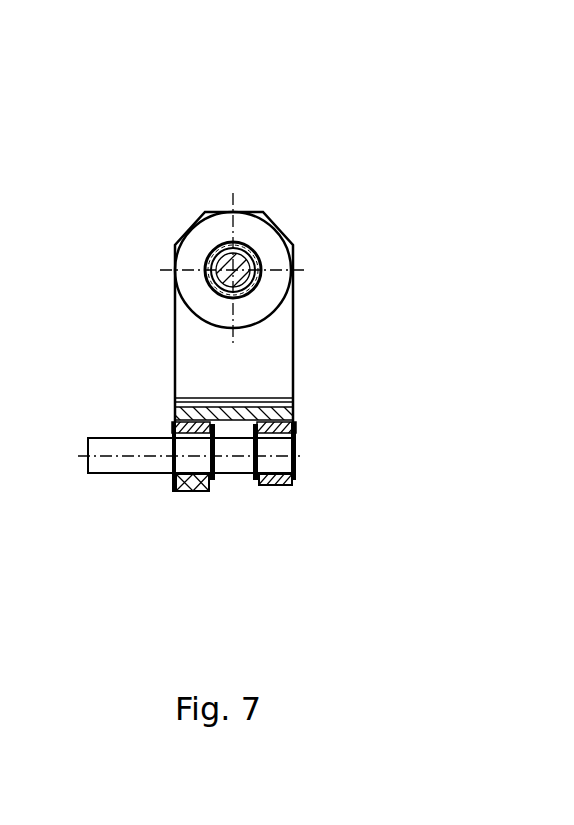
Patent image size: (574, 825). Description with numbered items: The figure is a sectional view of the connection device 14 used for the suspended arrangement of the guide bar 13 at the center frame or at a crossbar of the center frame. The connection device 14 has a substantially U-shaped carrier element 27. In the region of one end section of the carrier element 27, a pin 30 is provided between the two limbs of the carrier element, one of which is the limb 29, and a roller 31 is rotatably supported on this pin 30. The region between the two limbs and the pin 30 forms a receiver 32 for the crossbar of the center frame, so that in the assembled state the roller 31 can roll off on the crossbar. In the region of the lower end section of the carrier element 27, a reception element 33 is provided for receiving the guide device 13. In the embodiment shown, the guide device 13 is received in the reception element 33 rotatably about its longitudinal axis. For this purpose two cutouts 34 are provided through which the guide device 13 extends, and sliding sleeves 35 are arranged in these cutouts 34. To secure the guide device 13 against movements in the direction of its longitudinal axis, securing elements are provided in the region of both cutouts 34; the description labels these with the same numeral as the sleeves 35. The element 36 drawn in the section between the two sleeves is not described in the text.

The guide bar 13 is at (118, 468).
The connection device 14 is at (198, 131).
The carrier element 27 is at (284, 356).
The limb 29 is at (262, 341).
The pin 30 is at (237, 276).
The roller 31 is at (252, 236).
The receiver 32 is at (223, 372).
The reception element 33 is at (297, 432).
The cutout 34 is at (146, 433).
The sliding sleeve 35 is at (182, 492).
The clamping element 36 is at (233, 484).